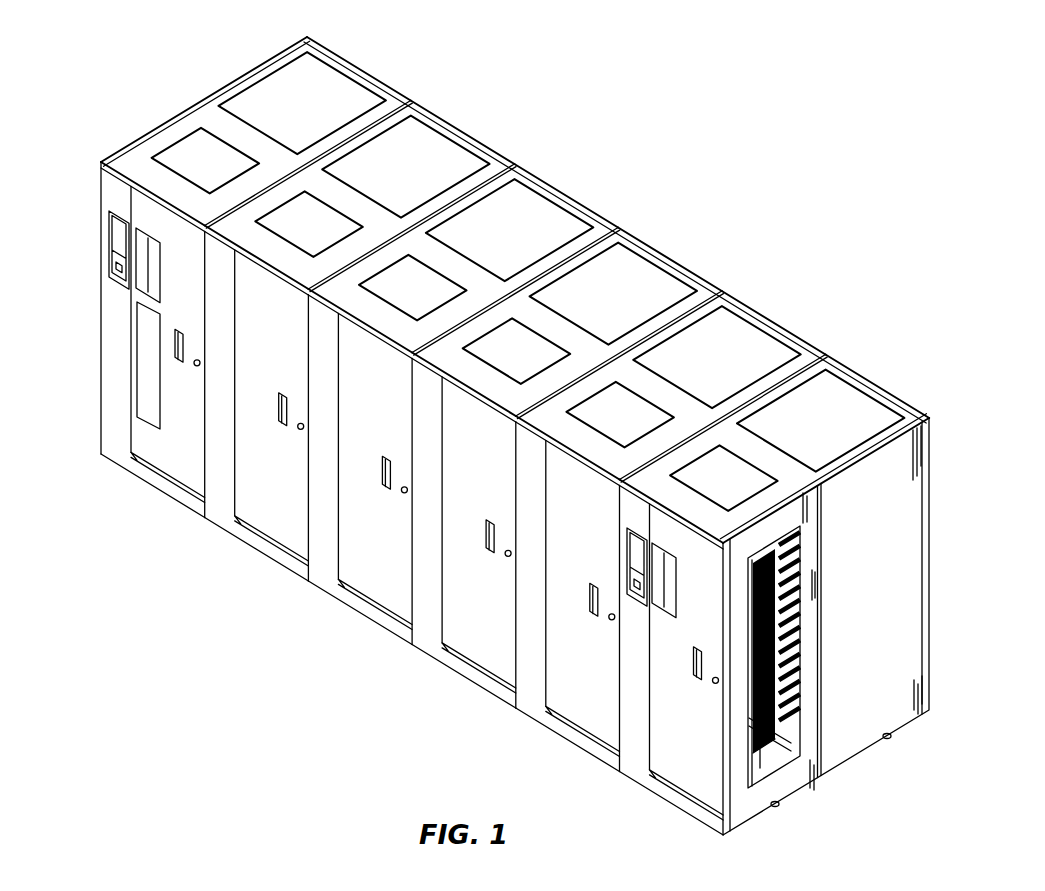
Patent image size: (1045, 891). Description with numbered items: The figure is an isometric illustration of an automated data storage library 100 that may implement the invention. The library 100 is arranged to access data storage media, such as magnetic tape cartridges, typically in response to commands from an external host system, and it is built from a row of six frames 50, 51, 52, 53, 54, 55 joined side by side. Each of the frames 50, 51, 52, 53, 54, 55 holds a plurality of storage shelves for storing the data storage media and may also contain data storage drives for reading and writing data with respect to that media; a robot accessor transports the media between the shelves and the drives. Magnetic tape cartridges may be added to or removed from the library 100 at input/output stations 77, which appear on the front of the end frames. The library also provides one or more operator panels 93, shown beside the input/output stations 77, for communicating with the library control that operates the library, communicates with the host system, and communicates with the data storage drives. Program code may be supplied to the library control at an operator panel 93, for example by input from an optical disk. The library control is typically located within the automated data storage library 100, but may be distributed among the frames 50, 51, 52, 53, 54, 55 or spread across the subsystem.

The automated data storage library 100 is at (618, 56).
The frame 50 is at (870, 379).
The frame 51 is at (760, 311).
The frame 52 is at (678, 261).
The frame 53 is at (573, 198).
The frame 54 is at (462, 129).
The frame 55 is at (345, 58).
The operator panel 93 is at (113, 245).
The input/output station 77 is at (153, 272).